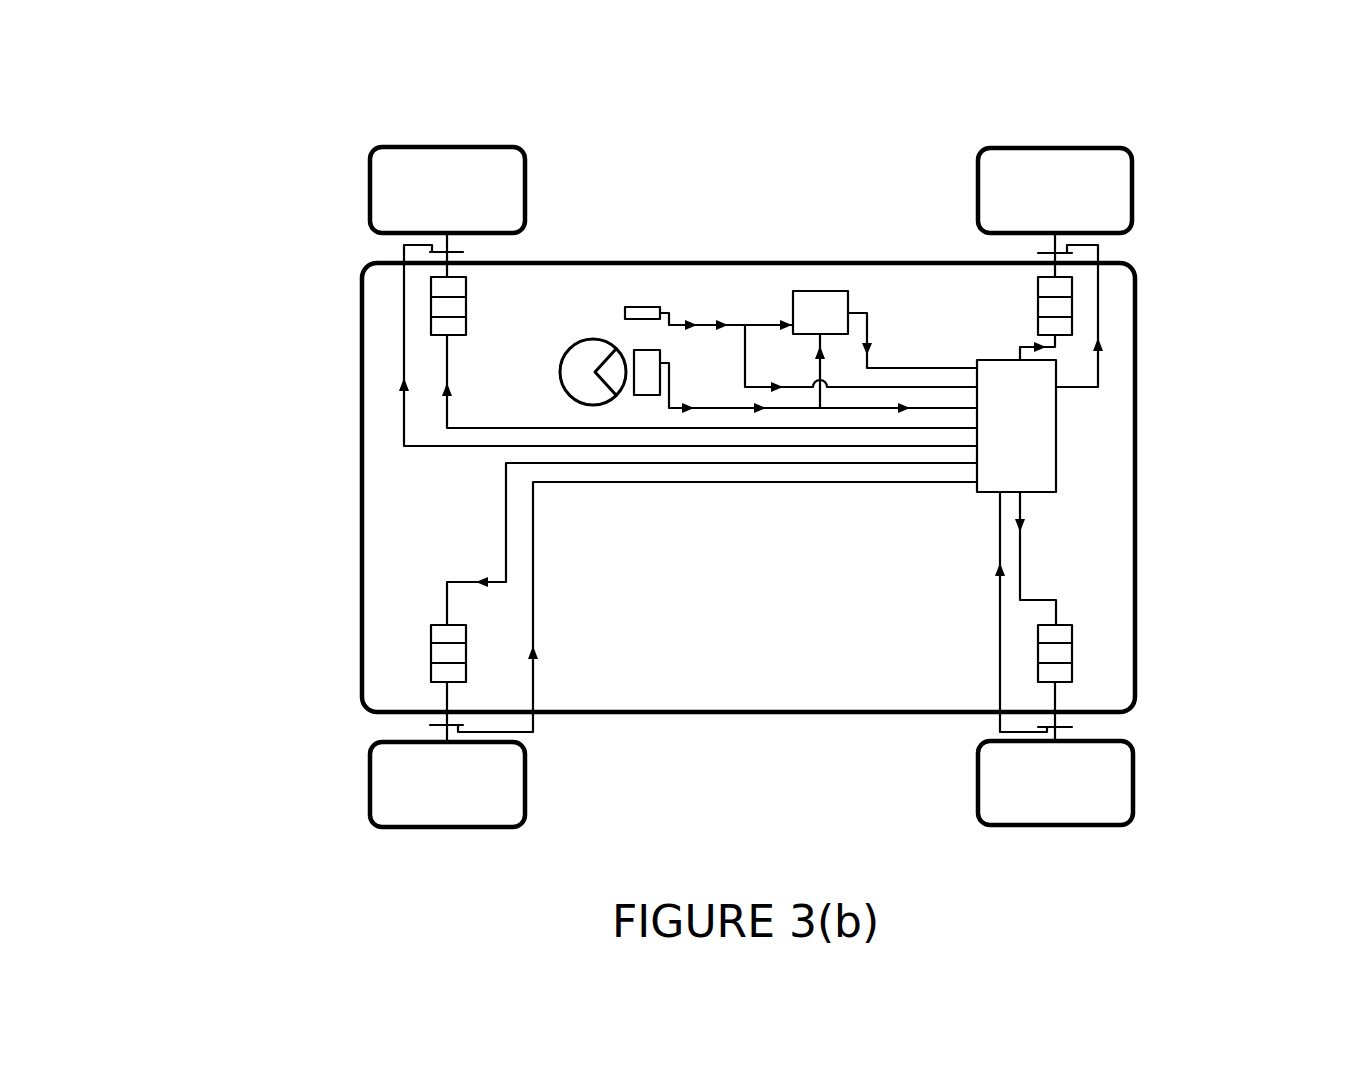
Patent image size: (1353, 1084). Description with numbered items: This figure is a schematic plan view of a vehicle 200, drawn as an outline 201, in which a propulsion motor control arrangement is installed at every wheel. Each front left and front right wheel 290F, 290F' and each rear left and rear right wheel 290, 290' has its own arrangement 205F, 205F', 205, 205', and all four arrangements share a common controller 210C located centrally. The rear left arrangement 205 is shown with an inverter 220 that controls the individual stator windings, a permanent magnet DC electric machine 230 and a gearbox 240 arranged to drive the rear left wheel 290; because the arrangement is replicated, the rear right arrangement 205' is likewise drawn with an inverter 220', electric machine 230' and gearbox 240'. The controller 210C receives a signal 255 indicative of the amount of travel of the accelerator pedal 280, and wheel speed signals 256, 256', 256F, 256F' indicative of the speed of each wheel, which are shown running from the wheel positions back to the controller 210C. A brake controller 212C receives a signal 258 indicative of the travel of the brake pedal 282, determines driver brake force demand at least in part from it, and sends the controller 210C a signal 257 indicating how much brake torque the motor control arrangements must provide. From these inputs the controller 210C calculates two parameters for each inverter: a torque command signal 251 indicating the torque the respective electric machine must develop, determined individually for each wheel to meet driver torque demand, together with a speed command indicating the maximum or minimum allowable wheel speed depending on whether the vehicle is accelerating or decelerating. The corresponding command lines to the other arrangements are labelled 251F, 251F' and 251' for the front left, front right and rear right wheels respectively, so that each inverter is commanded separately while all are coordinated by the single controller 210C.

The vehicle 200 is at (200, 110).
The vehicle body 201 is at (1135, 639).
The vehicle propulsion motor control arrangement 205 is at (1171, 653).
The motor control arrangement 205F is at (334, 653).
The motor control arrangement 205F' is at (357, 307).
The motor control arrangement 205' is at (1005, 199).
The common controller 210C is at (1056, 407).
The brake controller 212C is at (823, 291).
The inverter 220 is at (1186, 546).
The pressure control valve 220' is at (1191, 294).
The permanent magnet DC electric machine 230 is at (1188, 593).
The valve unit element 230' is at (1170, 271).
The gearbox 240 is at (1188, 706).
The wheel speed sensor 240' is at (1190, 228).
The torque command signal 251 is at (1052, 558).
The front brake control signal 251F is at (701, 544).
The front brake control signal 251F' is at (709, 381).
The brake control signal 251' is at (980, 329).
The accelerator pedal travel signal 255 is at (722, 318).
The wheel speed signal 256 is at (998, 612).
The wheel speed signal 256F is at (717, 607).
The wheel speed signal 256F' is at (589, 345).
The wheel speed signal 256' is at (1162, 316).
The brake torque demand signal 257 is at (873, 348).
The brake pedal travel signal 258 is at (693, 427).
The accelerator pedal 280 is at (690, 318).
The brake pedal 282 is at (670, 373).
The rear left wheel 290 is at (1096, 799).
The front left wheel 290F is at (445, 816).
The front right wheel 290F' is at (444, 160).
The rear right wheel 290' is at (1100, 175).